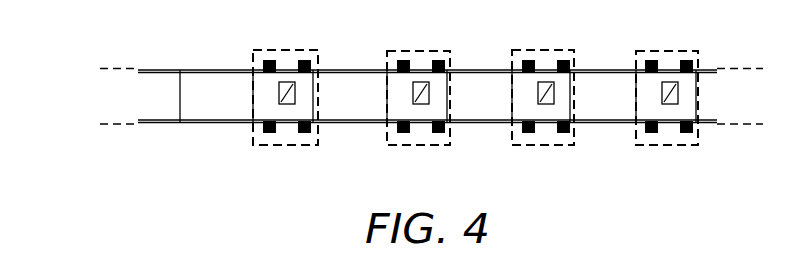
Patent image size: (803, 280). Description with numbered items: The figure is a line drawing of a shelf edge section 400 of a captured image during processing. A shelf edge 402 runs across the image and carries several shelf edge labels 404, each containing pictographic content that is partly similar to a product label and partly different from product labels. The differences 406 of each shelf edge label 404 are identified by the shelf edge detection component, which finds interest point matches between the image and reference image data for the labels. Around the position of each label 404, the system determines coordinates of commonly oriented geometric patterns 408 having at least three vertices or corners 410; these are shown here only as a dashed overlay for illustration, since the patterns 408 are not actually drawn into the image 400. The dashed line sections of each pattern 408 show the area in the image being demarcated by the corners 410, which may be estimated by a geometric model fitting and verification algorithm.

The shelf edge section 400 is at (419, 107).
The shelf edge 402 is at (146, 93).
The shelf edge label 404 is at (410, 72).
The differences 406 is at (478, 61).
The geometric pattern 408 is at (475, 120).
The corner 410 is at (315, 131).